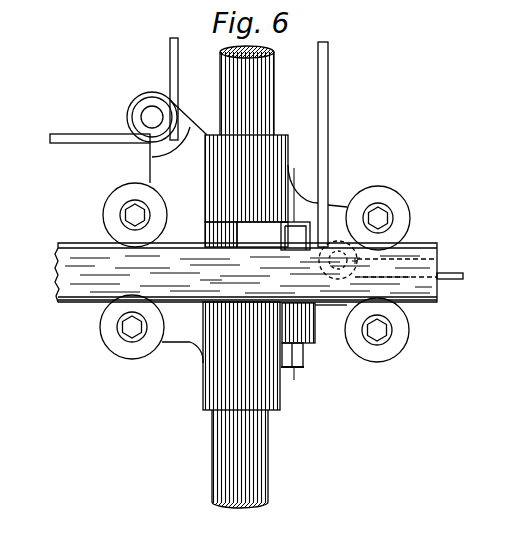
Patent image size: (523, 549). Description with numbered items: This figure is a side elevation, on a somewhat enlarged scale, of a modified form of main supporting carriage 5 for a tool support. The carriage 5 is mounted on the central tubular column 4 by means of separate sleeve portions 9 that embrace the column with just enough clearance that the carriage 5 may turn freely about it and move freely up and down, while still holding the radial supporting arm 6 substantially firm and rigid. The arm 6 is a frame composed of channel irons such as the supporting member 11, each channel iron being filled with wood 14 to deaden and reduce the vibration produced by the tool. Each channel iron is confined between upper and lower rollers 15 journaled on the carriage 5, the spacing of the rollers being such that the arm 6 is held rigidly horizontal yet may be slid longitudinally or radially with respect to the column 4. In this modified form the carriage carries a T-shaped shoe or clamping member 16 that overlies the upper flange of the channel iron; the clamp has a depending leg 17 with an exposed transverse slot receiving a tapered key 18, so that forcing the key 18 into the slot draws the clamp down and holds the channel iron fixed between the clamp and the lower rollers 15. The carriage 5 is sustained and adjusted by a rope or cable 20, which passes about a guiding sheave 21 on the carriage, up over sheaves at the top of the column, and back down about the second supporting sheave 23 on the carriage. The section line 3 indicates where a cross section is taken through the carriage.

The section line 3 is at (294, 267).
The column 4 is at (262, 456).
The main supporting carriage 5 is at (192, 333).
The radial supporting arm 6 is at (100, 181).
The sleeve portions 9 is at (272, 135).
The supporting member 11 is at (95, 299).
The wood 14 is at (58, 265).
The rollers 15 is at (128, 186).
The T-shaped shoe or clamping member 16 is at (303, 242).
The depending leg 17 is at (304, 354).
The tapered key 18 is at (302, 366).
The rope or cable 20 is at (172, 68).
The guiding sheave 21 is at (405, 247).
The second supporting sheave 23 is at (131, 104).